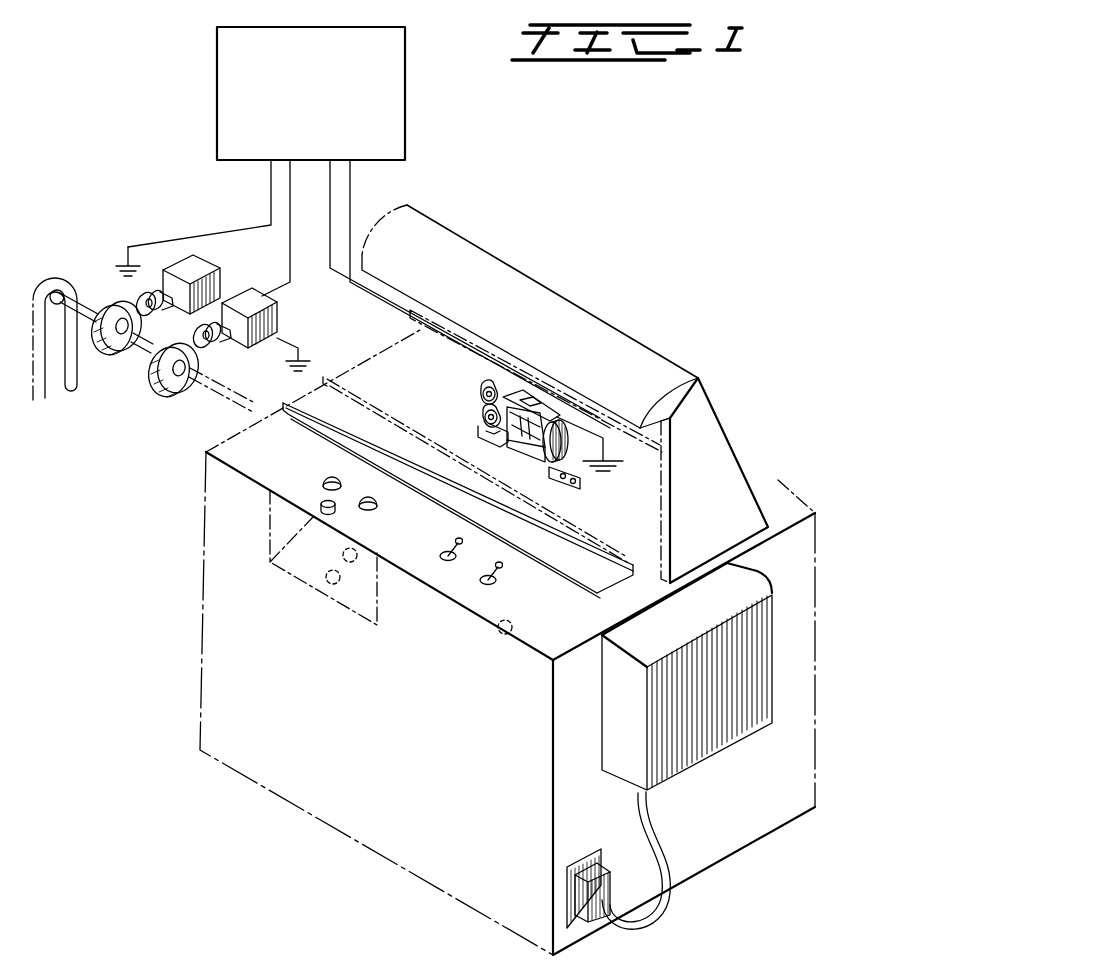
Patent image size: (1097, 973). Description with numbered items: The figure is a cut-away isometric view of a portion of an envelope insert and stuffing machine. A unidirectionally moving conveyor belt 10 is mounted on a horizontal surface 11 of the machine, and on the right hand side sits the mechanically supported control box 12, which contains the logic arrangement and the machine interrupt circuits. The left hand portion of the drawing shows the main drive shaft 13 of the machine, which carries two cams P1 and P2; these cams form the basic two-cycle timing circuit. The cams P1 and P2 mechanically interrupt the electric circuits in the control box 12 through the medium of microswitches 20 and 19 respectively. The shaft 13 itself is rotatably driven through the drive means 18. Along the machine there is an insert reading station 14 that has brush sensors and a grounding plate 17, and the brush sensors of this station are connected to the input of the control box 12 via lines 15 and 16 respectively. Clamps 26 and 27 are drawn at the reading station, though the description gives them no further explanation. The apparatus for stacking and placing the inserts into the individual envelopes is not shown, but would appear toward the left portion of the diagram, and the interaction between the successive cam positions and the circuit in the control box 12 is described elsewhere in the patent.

The conveyor belt 10 is at (590, 580).
The horizontal surface 11 is at (500, 630).
The control box 12 is at (405, 122).
The main drive shaft 13 is at (232, 404).
The insert reading station 14 is at (563, 442).
The line 15 is at (382, 312).
The line 16 is at (407, 311).
The grounding plate 17 is at (603, 446).
The drive means 18 is at (32, 318).
The microswitch 19 is at (249, 292).
The microswitch 20 is at (189, 256).
The clamp 26 is at (476, 402).
The clamp 27 is at (476, 425).
The cam P1 is at (117, 370).
The cam P2 is at (172, 396).